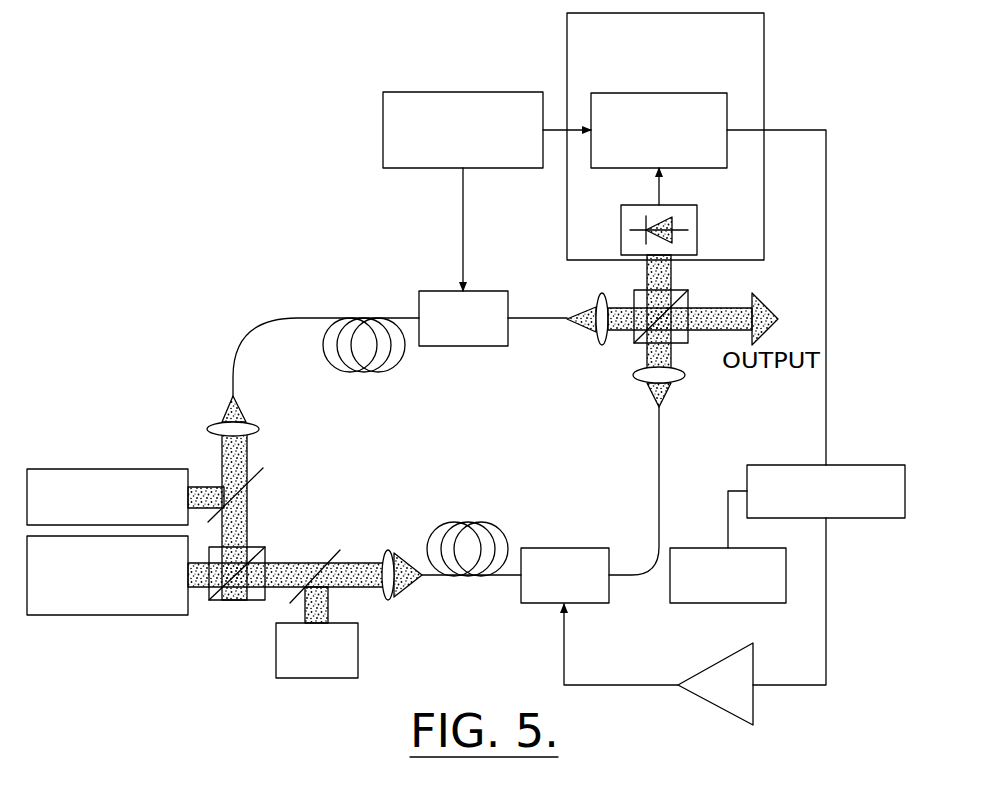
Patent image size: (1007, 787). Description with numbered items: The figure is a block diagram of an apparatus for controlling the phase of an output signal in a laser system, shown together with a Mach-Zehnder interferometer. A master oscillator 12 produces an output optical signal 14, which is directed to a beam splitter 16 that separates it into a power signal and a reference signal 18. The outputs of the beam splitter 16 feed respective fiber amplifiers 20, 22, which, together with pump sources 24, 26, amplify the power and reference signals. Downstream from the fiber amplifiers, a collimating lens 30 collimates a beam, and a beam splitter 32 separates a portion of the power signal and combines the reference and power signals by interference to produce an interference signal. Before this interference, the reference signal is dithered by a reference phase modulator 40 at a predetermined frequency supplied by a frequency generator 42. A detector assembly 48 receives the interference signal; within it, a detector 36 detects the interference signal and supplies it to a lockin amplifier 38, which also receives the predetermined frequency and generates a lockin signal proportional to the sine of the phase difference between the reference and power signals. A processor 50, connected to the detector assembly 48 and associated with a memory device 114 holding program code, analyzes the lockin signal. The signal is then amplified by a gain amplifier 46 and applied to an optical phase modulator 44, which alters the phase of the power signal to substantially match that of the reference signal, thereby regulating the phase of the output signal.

The master oscillator 12 is at (94, 610).
The output optical signal 14 is at (296, 548).
The beam splitter 16 is at (235, 606).
The reference signal 18 is at (220, 460).
The fiber amplifier 20 is at (674, 278).
The fiber amplifier 22 is at (681, 385).
The pump source 24 is at (304, 675).
The pump source 26 is at (94, 521).
The collimating lens 30 is at (594, 292).
The beam splitter 32 is at (633, 351).
The detector 36 is at (700, 222).
The lockin amplifier 38 is at (672, 168).
The reference phase modulator 40 is at (451, 341).
The frequency generator 42 is at (450, 161).
The optical phase modulator 44 is at (553, 598).
The gain amplifier 46 is at (717, 697).
The detector assembly 48 is at (650, 90).
The processor 50 is at (813, 515).
The memory device 114 is at (710, 599).